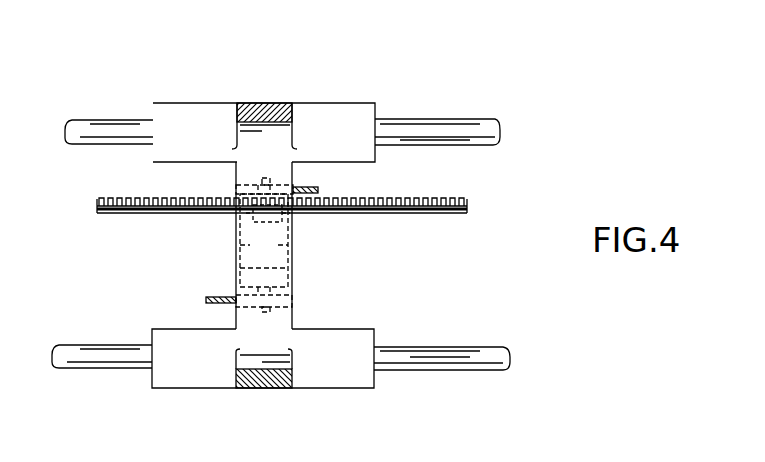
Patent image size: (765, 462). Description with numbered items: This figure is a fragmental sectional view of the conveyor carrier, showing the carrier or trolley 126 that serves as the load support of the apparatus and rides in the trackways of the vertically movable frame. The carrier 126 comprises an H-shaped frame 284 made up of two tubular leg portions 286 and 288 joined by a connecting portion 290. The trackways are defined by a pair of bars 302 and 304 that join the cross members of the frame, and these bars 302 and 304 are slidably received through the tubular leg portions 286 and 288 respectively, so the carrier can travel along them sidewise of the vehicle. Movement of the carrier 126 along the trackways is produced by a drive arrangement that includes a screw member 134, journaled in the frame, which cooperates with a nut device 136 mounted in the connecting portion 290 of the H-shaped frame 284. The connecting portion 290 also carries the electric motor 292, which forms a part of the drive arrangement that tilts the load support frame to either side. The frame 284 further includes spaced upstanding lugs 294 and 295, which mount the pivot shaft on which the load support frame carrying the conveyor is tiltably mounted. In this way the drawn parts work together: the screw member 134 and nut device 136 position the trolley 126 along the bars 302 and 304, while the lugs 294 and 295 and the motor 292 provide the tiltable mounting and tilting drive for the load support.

The carrier or trolley 126 is at (393, 97).
The screw member 134 is at (463, 200).
The nut device 136 is at (247, 222).
The H-shaped frame 284 is at (230, 102).
The tubular leg portion 286 is at (345, 115).
The tubular leg portion 288 is at (365, 338).
The connecting portion 290 is at (292, 312).
The electric motor 292 is at (296, 248).
The upstanding lug 294 is at (272, 110).
The upstanding lug 295 is at (262, 388).
The bar 302 is at (480, 130).
The bar 304 is at (493, 355).